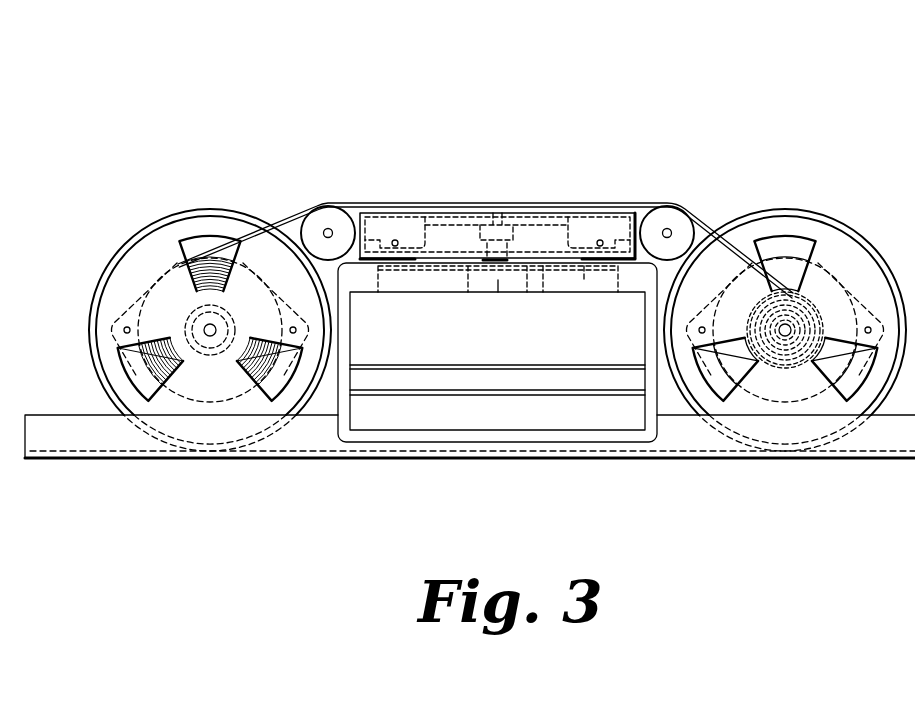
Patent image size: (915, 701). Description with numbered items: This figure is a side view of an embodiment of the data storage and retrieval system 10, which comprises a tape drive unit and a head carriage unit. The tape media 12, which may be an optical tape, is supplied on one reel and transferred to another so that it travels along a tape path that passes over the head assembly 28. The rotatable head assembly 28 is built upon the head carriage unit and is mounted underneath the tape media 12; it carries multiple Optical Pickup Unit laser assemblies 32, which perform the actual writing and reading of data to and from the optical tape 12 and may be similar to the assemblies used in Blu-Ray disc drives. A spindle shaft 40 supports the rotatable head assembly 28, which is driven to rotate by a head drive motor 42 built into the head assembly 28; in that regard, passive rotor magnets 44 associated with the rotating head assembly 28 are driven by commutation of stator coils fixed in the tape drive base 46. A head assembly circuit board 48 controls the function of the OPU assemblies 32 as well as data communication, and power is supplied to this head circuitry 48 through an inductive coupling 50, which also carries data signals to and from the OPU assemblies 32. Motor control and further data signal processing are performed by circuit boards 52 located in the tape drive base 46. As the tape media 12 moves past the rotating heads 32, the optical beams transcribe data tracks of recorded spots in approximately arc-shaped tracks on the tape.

The data storage and retrieval system 10 is at (742, 80).
The tape media 12 is at (662, 205).
The head assembly 28 is at (418, 212).
The Optical Pickup Unit (OPU) laser assemblies 32 is at (372, 216).
The spindle shaft 40 is at (490, 260).
The head drive motor 42 is at (498, 292).
The passive rotor magnets 44 is at (584, 266).
The tape drive base 46 is at (337, 379).
The head assembly circuit board 48 is at (546, 224).
The inductive coupling 50 is at (543, 266).
The circuit boards 52 is at (433, 397).